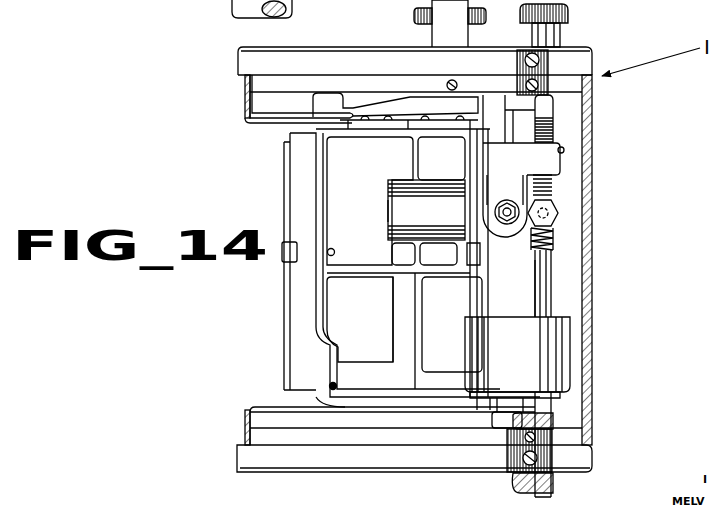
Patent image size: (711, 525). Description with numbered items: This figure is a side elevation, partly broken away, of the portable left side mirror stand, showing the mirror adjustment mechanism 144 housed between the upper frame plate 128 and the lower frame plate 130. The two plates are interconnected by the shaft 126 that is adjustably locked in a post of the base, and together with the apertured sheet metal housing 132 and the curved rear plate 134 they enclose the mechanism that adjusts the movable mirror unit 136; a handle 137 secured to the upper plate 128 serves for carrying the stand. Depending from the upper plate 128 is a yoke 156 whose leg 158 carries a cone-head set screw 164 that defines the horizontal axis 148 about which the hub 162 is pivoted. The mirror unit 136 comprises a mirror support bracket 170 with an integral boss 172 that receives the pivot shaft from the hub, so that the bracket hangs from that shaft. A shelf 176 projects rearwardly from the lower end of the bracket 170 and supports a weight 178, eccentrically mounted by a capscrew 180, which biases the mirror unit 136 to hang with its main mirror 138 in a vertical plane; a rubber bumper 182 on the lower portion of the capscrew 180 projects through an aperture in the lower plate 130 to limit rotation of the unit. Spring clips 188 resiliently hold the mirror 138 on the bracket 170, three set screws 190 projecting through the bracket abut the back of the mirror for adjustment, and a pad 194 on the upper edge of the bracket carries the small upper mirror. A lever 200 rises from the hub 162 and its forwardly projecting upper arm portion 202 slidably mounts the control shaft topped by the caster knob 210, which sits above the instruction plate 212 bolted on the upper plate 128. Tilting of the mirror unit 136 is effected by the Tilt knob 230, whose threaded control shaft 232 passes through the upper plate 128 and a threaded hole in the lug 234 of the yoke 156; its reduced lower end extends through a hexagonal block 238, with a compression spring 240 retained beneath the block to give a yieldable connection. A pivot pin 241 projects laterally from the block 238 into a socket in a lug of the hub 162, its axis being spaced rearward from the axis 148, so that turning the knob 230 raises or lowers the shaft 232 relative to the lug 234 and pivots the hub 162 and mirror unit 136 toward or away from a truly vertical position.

The shaft 126 is at (515, 490).
The upper frame plate 128 is at (246, 62).
The lower frame plate 130 is at (250, 453).
The sheet metal housing 132 is at (246, 98).
The curved rear plate 134 is at (587, 266).
The mirror unit 136 is at (285, 170).
The handle 137 is at (390, 62).
The main beam mirror 138 is at (287, 200).
The mirror adjustment mechanism 144 is at (556, 117).
The horizontal axis 148 is at (512, 220).
The yoke 156 is at (564, 150).
The yoke leg 158 is at (482, 198).
The hub 162 is at (482, 246).
The cone-head set screw 164 is at (505, 201).
The mirror support bracket 170 is at (298, 220).
The boss 172 is at (398, 206).
The shelf 176 is at (490, 406).
The weight 178 is at (480, 322).
The capscrew 180 is at (513, 478).
The rubber bumper 182 is at (496, 433).
The spring clip 188 is at (320, 398).
The set screw 190 is at (337, 388).
The pad 194 is at (392, 127).
The lever 200 is at (475, 150).
The upper arm portion 202 is at (410, 100).
The caster knob 210 is at (420, 15).
The instruction plate 212 is at (438, 37).
The Tilt knob 230 is at (565, 30).
The threaded control shaft 232 is at (556, 128).
The lug 234 is at (562, 165).
The hexagonal block 238 is at (558, 206).
The compression spring 240 is at (548, 233).
The pivot pin 241 is at (560, 214).